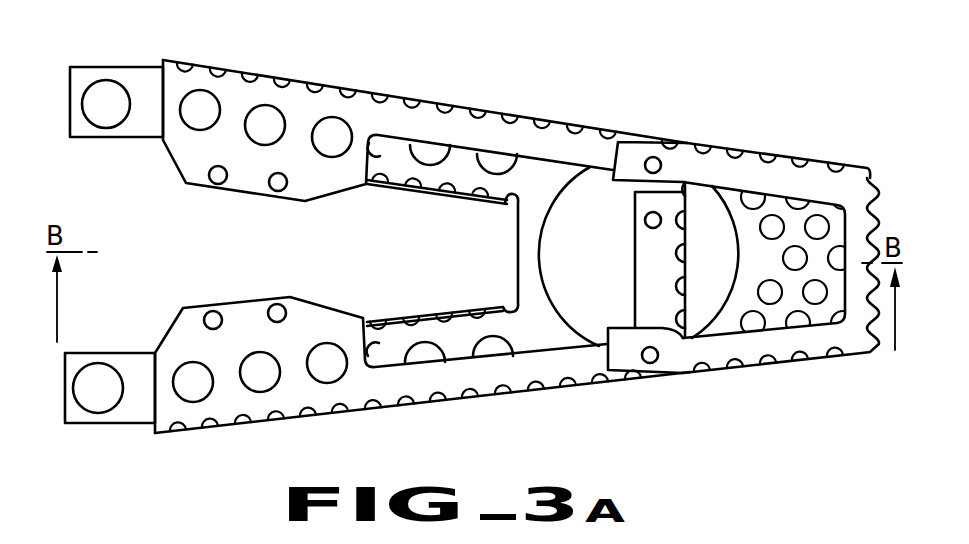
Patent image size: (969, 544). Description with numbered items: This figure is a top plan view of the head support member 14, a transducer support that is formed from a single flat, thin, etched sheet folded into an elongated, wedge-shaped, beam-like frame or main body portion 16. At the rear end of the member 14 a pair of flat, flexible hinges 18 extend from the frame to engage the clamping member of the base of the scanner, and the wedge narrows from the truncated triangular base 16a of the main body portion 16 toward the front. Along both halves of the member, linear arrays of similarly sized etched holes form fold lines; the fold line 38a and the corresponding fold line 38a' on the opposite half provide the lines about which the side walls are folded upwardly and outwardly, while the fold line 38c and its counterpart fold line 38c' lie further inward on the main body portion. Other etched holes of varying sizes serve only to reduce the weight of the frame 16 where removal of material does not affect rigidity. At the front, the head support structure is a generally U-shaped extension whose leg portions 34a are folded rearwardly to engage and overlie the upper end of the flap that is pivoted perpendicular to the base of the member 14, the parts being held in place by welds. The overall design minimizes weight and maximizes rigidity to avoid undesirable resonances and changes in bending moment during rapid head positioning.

The head support member 14 is at (730, 387).
The main body portion 16 is at (608, 122).
The truncated triangular base 16a is at (537, 340).
The hinges 18 is at (142, 82).
The leg portions 34a is at (743, 168).
The fold line 38a is at (405, 410).
The fold line 38a' is at (396, 97).
The fold line 38c is at (435, 301).
The fold line 38c' is at (442, 243).